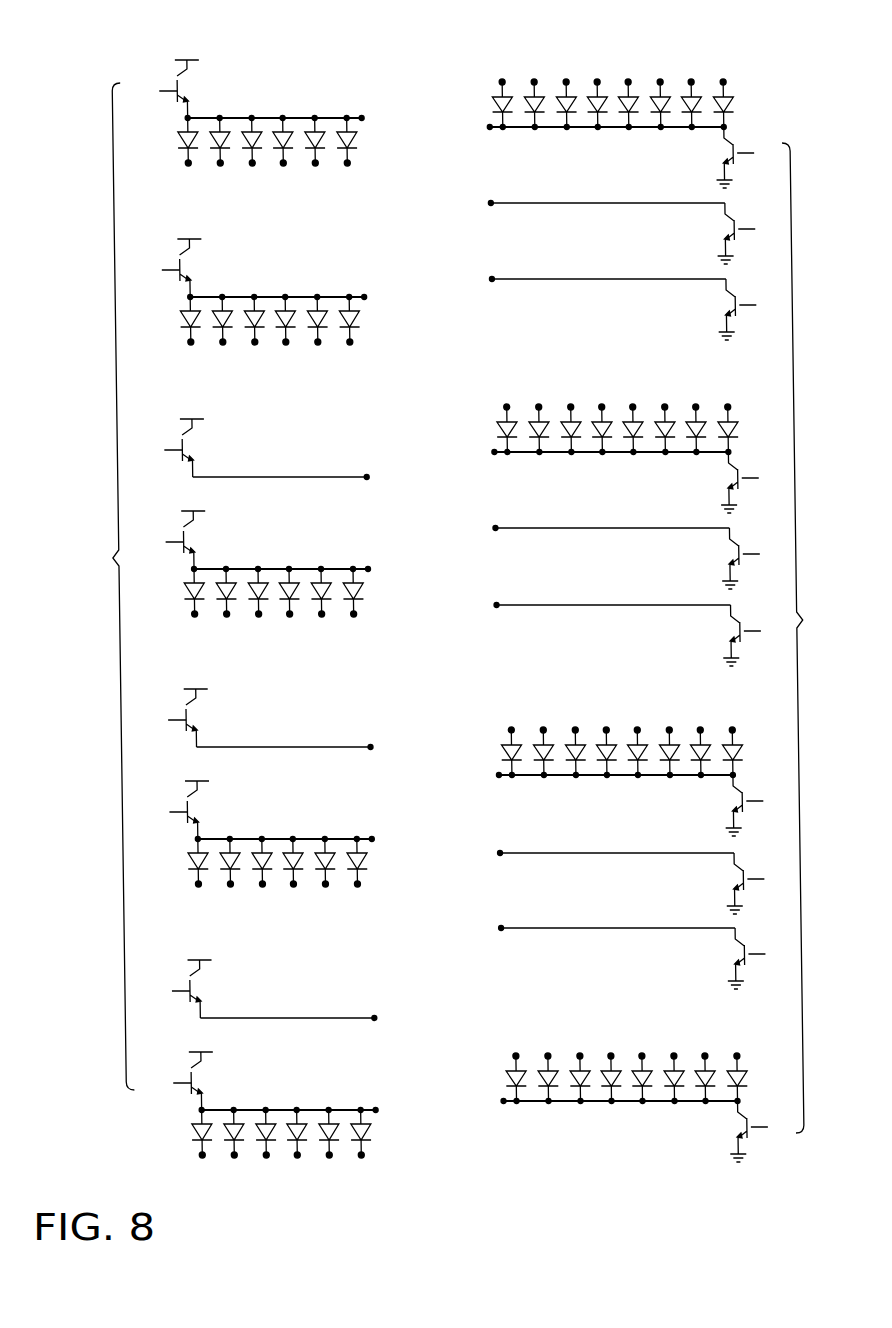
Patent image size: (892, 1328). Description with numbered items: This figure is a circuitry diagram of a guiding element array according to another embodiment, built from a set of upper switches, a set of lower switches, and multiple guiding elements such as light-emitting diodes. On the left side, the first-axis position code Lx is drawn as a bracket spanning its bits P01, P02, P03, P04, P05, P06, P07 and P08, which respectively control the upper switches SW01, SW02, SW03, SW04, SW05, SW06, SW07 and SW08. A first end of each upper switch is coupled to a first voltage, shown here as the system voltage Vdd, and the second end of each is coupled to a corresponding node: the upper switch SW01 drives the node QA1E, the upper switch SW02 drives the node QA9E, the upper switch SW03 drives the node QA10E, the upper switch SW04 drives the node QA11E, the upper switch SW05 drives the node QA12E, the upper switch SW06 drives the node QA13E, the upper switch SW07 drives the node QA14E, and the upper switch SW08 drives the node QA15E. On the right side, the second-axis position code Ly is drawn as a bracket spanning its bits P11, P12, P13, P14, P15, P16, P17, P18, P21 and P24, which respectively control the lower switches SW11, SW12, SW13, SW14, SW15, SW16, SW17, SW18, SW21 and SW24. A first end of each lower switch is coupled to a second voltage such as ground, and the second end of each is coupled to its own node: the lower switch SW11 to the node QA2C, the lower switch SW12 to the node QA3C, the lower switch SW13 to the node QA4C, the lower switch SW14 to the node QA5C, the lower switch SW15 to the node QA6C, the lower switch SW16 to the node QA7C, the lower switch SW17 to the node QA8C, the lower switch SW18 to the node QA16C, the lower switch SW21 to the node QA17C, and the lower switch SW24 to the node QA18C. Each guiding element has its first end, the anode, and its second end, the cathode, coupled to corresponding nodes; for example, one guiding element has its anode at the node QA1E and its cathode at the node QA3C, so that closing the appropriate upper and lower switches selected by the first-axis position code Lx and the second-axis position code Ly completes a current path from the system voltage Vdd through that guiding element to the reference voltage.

The system voltage Vdd is at (194, 546).
The bit of first-axis position code P01 is at (156, 91).
The bit of first-axis position code P02 is at (159, 270).
The bit of first-axis position code P03 is at (161, 450).
The bit of first-axis position code P04 is at (163, 542).
The bit of first-axis position code P05 is at (165, 720).
The bit of first-axis position code P06 is at (166, 812).
The bit of first-axis position code P07 is at (169, 991).
The bit of first-axis position code P08 is at (170, 1083).
The upper switch SW01 is at (204, 89).
The upper switch SW02 is at (206, 268).
The upper switch SW03 is at (209, 448).
The upper switch SW04 is at (210, 540).
The upper switch SW05 is at (213, 718).
The upper switch SW06 is at (214, 810).
The upper switch SW07 is at (217, 989).
The upper switch SW08 is at (218, 1081).
The node QA1E is at (357, 570).
The node QA9E is at (373, 570).
The node QA10E is at (388, 566).
The node QA11E is at (404, 566).
The node QA12E is at (419, 566).
The node QA13E is at (435, 566).
The node QA14E is at (451, 566).
The node QA15E is at (467, 574).
The node QA2C is at (587, 126).
The node QA3C is at (458, 657).
The node QA4C is at (474, 657).
The node QA5C is at (591, 451).
The node QA6C is at (490, 657).
The node QA7C is at (506, 657).
The node QA8C is at (596, 774).
The node QA16C is at (522, 661).
The node QA17C is at (538, 661).
The node QA18C is at (596, 1100).
The lower switch SW11 is at (707, 157).
The lower switch SW12 is at (708, 233).
The lower switch SW13 is at (709, 309).
The lower switch SW14 is at (711, 482).
The lower switch SW15 is at (712, 558).
The lower switch SW16 is at (714, 635).
The lower switch SW17 is at (716, 805).
The lower switch SW18 is at (717, 883).
The lower switch SW21 is at (718, 958).
The lower switch SW24 is at (721, 1131).
The bit of second-axis position code P11 is at (757, 153).
The bit of second-axis position code P12 is at (758, 229).
The bit of second-axis position code P13 is at (759, 305).
The bit of second-axis position code P14 is at (762, 478).
The bit of second-axis position code P15 is at (763, 554).
The bit of second-axis position code P16 is at (764, 631).
The bit of second-axis position code P17 is at (766, 801).
The bit of second-axis position code P18 is at (767, 879).
The bit of second-axis position code P21 is at (768, 954).
The bit of second-axis position code P24 is at (771, 1127).
The first-axis position code Lx is at (96, 586).
The second-axis position code Ly is at (807, 638).